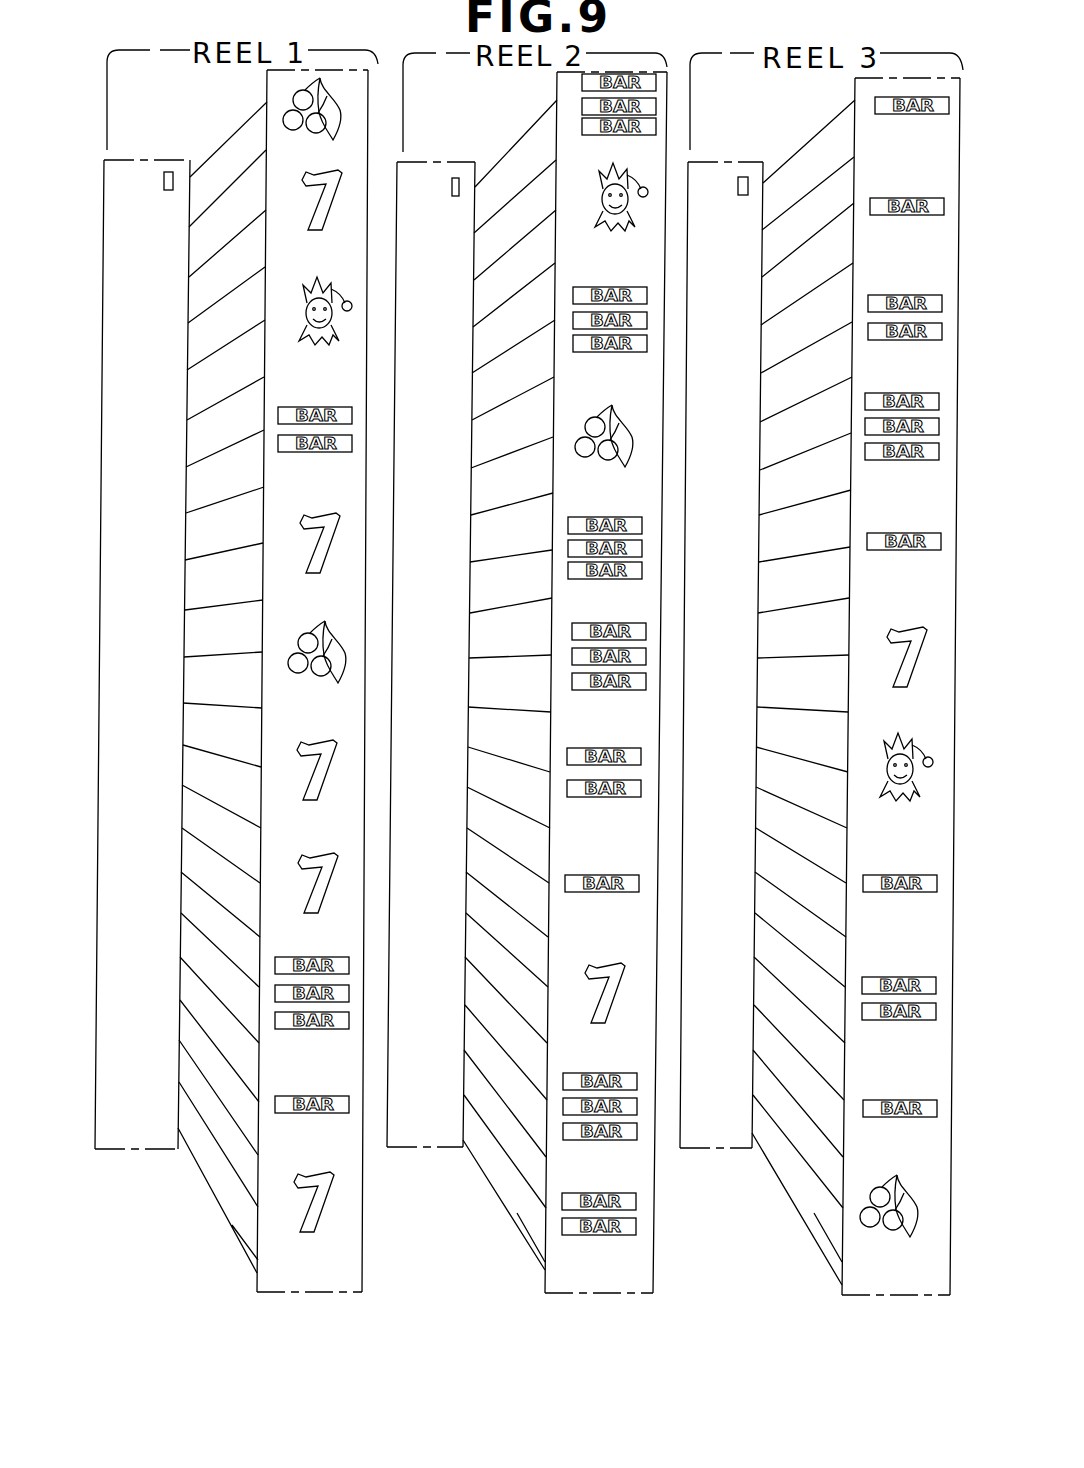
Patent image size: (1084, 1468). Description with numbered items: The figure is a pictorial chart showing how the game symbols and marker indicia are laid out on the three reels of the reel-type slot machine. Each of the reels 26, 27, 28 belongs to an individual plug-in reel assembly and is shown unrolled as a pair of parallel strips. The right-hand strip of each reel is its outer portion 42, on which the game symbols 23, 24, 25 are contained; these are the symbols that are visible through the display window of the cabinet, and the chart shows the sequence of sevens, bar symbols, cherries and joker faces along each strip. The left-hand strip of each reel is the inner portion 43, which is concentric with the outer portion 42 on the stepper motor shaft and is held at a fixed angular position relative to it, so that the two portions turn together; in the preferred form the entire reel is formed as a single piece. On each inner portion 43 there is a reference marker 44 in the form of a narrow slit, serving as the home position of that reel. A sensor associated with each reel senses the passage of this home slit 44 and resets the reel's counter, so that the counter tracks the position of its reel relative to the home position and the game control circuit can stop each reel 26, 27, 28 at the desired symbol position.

The game symbols 23 is at (310, 172).
The game symbols 24 is at (596, 176).
The game symbols 25 is at (888, 197).
The reel 26 is at (266, 681).
The reel 27 is at (556, 682).
The reel 28 is at (861, 686).
The outer portion 42 is at (353, 1250).
The inner portion 43 is at (148, 1135).
The reference marker 44 is at (166, 183).